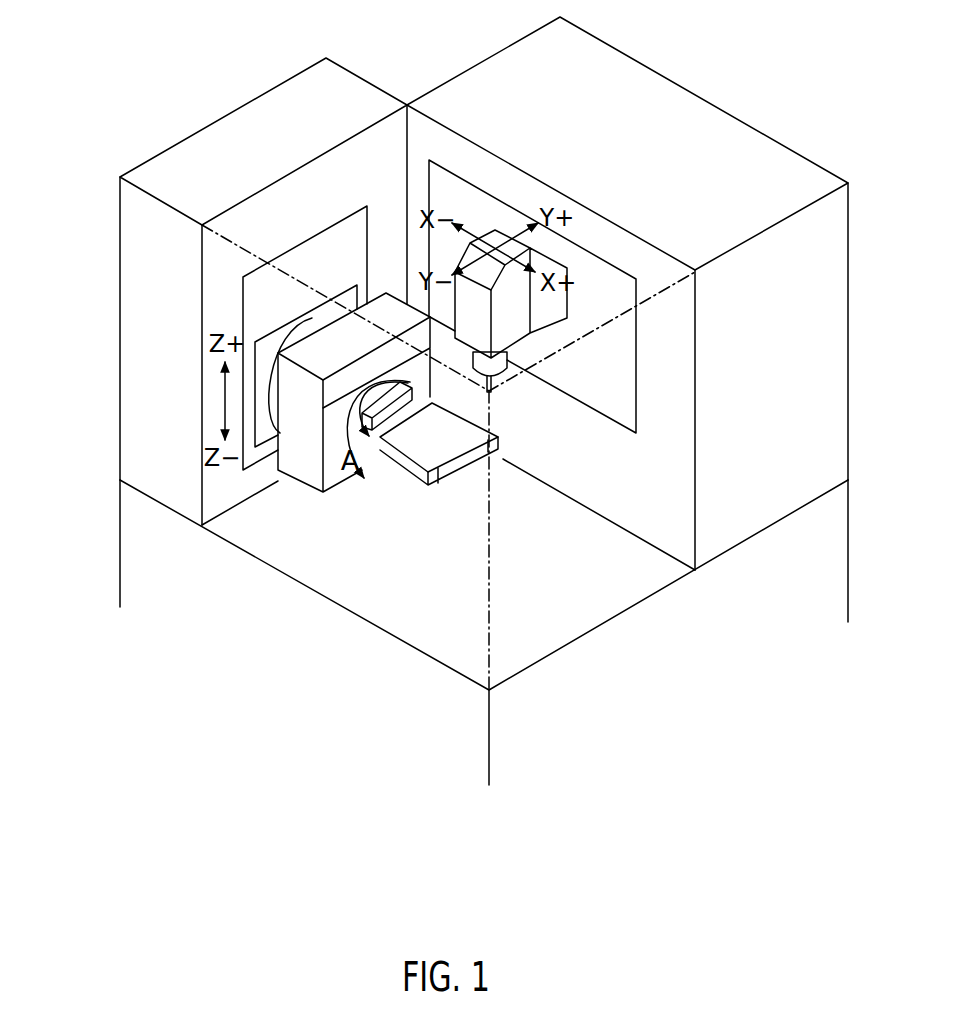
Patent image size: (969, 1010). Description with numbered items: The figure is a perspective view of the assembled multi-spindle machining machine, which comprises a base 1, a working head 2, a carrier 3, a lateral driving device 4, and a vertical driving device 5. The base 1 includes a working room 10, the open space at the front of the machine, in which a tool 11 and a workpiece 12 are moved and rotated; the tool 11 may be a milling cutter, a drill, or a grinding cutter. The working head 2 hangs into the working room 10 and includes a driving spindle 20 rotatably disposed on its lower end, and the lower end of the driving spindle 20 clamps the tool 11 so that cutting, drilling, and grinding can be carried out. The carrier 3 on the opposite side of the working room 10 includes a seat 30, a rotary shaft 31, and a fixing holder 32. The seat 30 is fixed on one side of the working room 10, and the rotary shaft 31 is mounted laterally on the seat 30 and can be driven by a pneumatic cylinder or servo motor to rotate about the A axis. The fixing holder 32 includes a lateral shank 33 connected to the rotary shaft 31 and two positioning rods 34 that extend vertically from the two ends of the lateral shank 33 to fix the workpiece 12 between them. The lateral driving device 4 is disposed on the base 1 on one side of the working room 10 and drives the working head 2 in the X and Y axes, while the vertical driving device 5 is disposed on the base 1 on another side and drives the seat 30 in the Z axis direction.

The base 1 is at (127, 540).
The working head 2 is at (517, 341).
The carrier 3 is at (305, 555).
The lateral driving device 4 is at (705, 115).
The vertical driving device 5 is at (234, 112).
The working room 10 is at (600, 569).
The tool 11 is at (495, 385).
The workpiece 12 is at (452, 465).
The driving spindle 20 is at (505, 367).
The seat 30 is at (307, 333).
The rotary shaft 31 is at (297, 468).
The fixing holder 32 is at (328, 545).
The lateral shank 33 is at (391, 423).
The positioning rods 34 is at (423, 476).